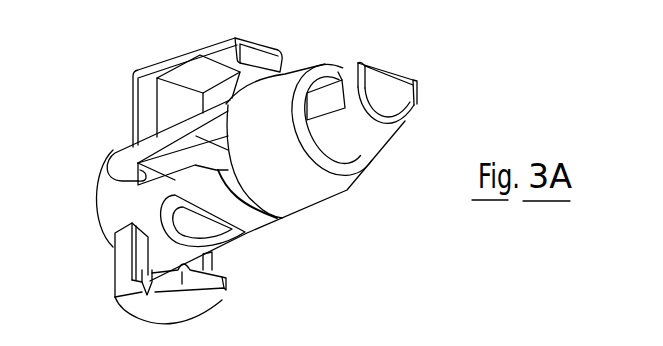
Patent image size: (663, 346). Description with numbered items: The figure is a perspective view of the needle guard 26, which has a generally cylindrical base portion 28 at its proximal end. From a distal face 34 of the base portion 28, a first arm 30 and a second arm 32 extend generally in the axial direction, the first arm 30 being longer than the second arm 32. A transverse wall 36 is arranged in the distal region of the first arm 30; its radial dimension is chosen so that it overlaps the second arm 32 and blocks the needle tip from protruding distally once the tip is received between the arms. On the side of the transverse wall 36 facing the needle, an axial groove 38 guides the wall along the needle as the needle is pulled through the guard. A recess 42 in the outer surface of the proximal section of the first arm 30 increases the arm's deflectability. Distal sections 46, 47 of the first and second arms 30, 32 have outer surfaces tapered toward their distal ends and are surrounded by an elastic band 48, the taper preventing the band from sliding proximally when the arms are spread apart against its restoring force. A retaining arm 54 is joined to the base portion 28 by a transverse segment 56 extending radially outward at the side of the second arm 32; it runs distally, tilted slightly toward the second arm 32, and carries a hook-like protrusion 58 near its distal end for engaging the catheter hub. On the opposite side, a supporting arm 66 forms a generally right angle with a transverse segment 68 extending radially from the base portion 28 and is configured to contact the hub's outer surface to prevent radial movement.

The needle guard 26 is at (409, 266).
The base portion 28 is at (106, 188).
The first arm 30 is at (268, 226).
The second arm 32 is at (187, 130).
The distal face 34 is at (122, 180).
The transverse wall 36 is at (400, 92).
The axial groove 38 is at (388, 73).
The recess 42 is at (222, 230).
The distal section of the first arm 46 is at (348, 153).
The distal section of the second arm 47 is at (323, 82).
The elastic band 48 is at (321, 198).
The retaining arm 54 is at (182, 63).
The transverse segment 56 is at (138, 121).
The hook-like protrusion 58 is at (228, 58).
The supporting arm 66 is at (213, 303).
The transverse segment 68 is at (123, 268).